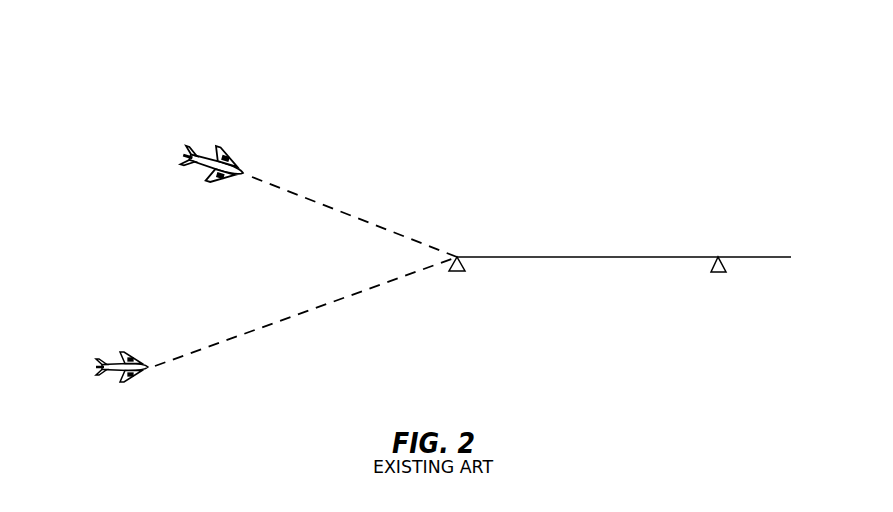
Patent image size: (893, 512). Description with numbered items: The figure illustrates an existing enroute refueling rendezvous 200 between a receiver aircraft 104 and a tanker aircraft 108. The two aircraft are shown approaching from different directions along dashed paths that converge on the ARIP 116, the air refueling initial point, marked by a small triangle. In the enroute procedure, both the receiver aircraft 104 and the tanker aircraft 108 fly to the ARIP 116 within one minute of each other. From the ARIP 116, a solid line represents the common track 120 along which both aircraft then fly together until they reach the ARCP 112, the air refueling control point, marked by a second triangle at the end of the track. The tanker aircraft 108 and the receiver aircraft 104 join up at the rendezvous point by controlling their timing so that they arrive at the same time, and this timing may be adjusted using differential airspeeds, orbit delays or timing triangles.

The enroute refueling rendezvous 200 is at (713, 87).
The receiver aircraft 104 is at (116, 366).
The tanker aircraft 108 is at (201, 152).
The ARCP 112 is at (718, 257).
The ARIP 116 is at (458, 256).
The common track 120 is at (588, 257).